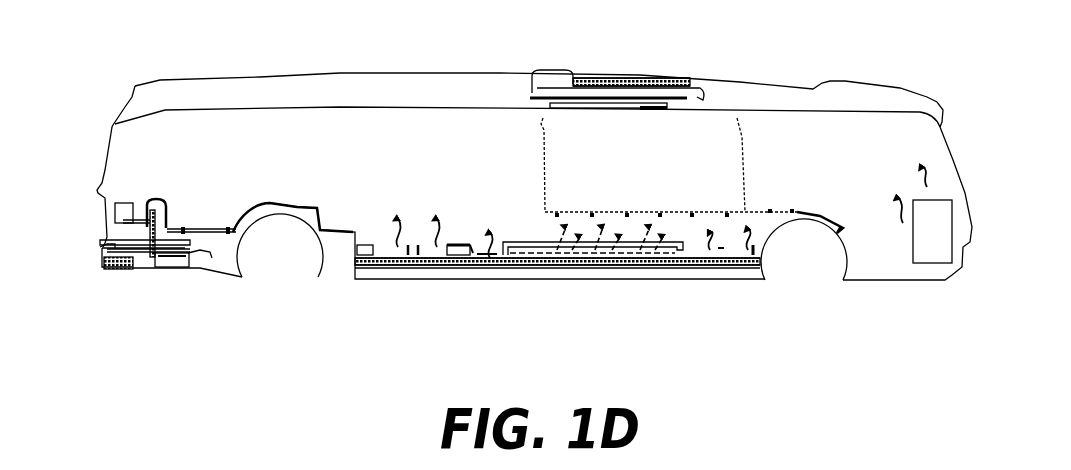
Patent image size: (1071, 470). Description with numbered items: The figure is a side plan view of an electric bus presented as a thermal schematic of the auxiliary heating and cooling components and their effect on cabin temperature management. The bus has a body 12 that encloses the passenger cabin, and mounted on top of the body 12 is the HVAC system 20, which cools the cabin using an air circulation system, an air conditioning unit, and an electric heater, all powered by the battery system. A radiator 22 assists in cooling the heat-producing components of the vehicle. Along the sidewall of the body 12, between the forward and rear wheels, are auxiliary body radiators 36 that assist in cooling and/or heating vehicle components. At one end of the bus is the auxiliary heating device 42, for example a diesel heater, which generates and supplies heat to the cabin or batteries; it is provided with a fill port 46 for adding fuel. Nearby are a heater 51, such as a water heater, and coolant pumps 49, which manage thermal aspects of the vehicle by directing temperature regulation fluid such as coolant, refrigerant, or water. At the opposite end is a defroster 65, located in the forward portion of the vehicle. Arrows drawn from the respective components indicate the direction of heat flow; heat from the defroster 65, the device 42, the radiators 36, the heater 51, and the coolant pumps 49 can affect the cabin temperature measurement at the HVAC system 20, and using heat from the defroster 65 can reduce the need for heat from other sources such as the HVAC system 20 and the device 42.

The body 12 is at (413, 153).
The HVAC system 20 is at (623, 73).
The radiator 22 is at (869, 90).
The auxiliary body radiators 36 is at (720, 255).
The auxiliary heating device 42 is at (182, 273).
The fill port 46 is at (188, 253).
The coolant pumps 49 is at (100, 247).
The heater 51 is at (120, 270).
The defroster 65 is at (939, 245).